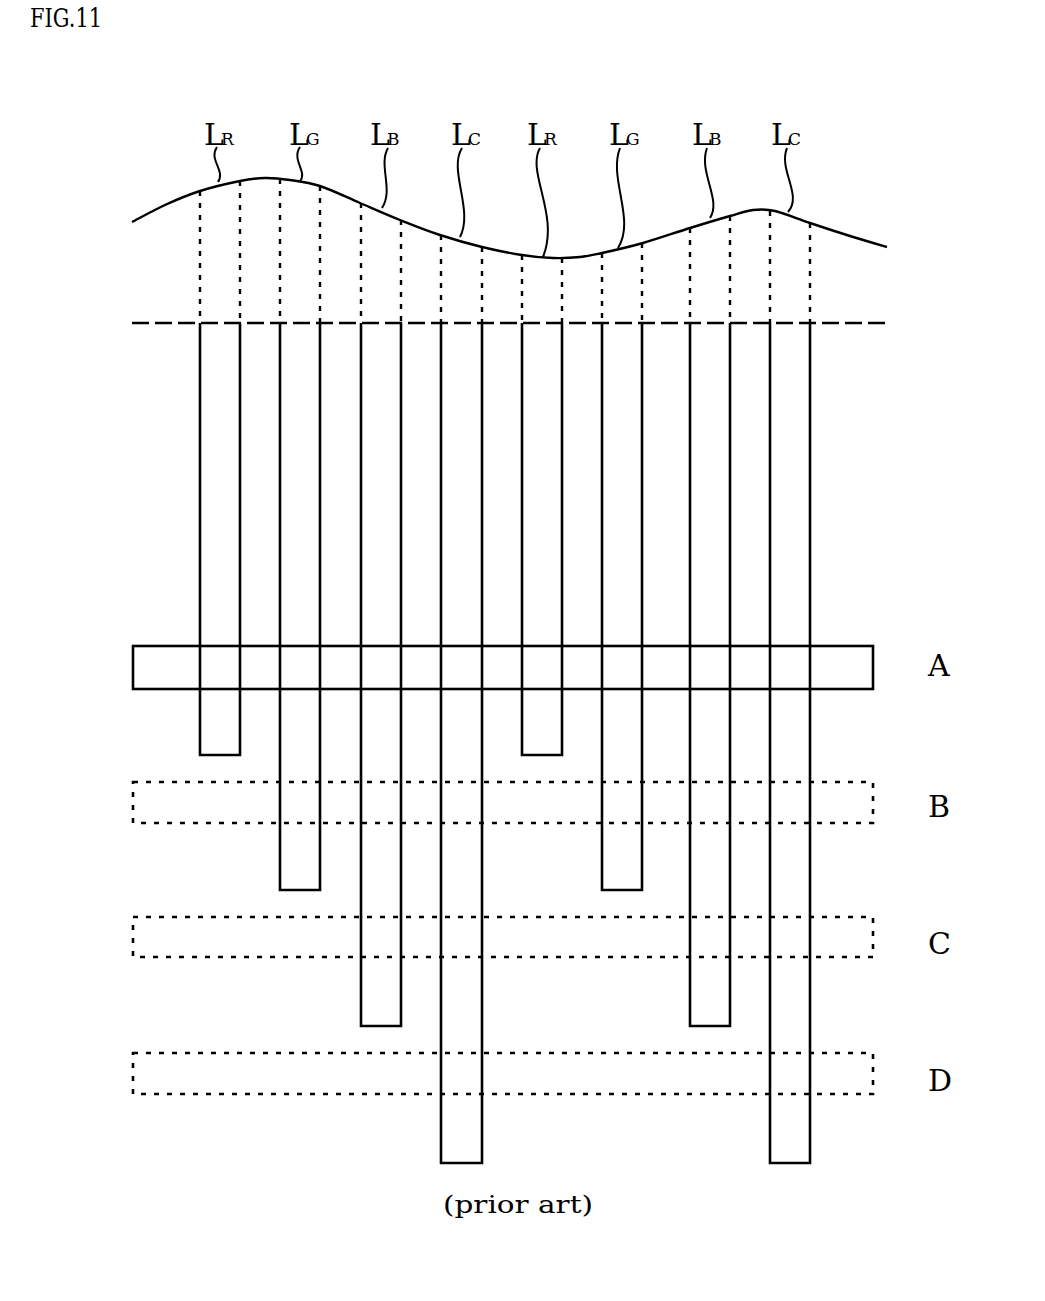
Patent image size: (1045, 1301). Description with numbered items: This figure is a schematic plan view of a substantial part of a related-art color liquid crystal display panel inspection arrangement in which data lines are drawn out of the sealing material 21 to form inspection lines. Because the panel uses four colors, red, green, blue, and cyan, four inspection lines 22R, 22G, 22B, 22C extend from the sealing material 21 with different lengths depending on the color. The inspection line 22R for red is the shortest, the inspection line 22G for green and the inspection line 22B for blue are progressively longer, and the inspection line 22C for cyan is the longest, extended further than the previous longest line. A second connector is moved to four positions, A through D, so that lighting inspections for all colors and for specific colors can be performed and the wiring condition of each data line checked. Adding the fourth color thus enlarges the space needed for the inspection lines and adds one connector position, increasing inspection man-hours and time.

The sealing material 21 is at (863, 325).
The inspection line for red 22R is at (217, 413).
The inspection line for green 22G is at (300, 448).
The inspection line for blue 22B is at (380, 487).
The inspection line for cyan 22C is at (463, 515).